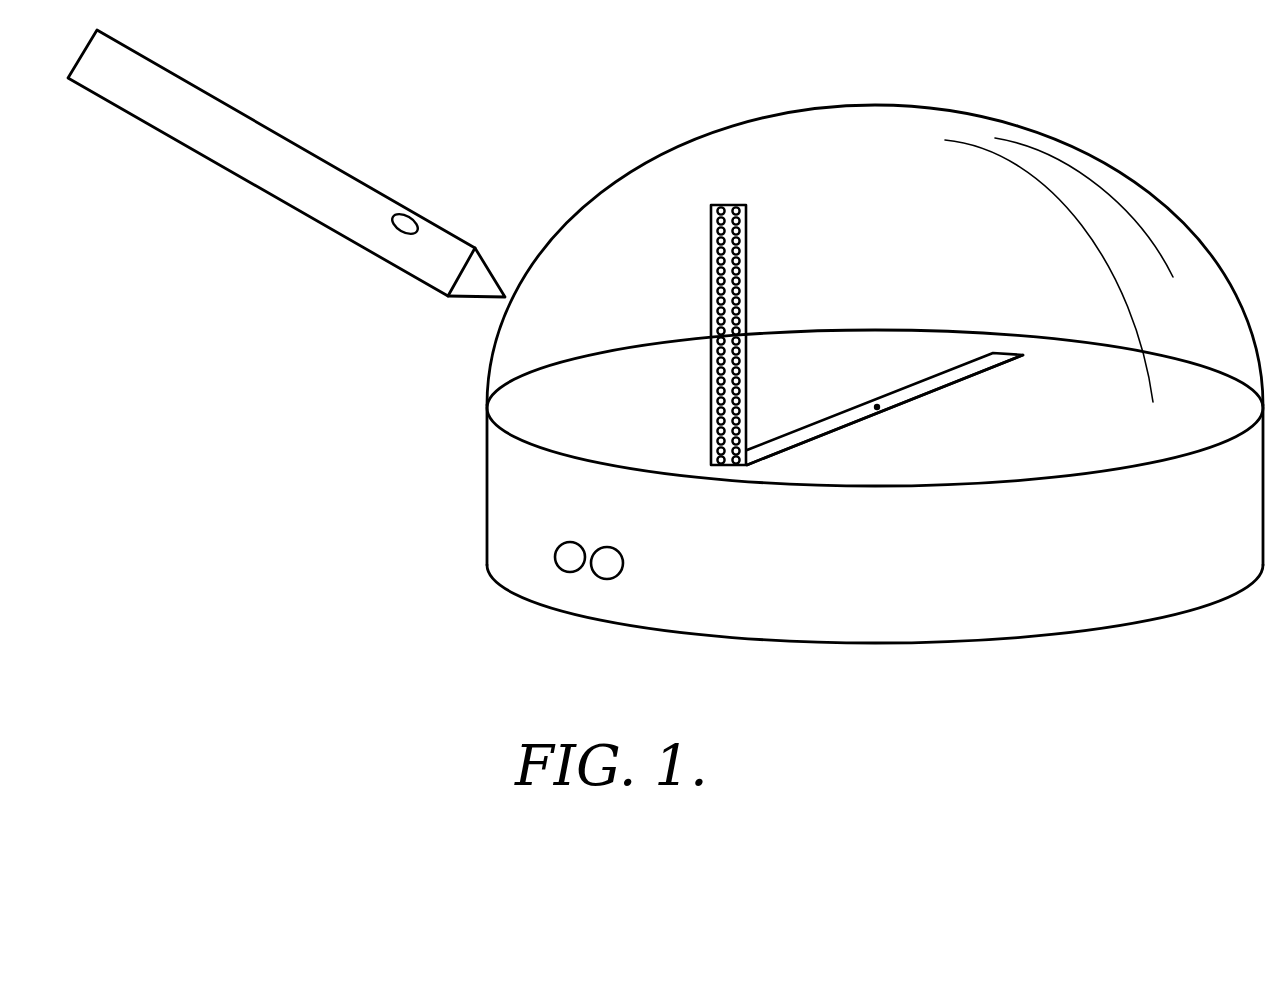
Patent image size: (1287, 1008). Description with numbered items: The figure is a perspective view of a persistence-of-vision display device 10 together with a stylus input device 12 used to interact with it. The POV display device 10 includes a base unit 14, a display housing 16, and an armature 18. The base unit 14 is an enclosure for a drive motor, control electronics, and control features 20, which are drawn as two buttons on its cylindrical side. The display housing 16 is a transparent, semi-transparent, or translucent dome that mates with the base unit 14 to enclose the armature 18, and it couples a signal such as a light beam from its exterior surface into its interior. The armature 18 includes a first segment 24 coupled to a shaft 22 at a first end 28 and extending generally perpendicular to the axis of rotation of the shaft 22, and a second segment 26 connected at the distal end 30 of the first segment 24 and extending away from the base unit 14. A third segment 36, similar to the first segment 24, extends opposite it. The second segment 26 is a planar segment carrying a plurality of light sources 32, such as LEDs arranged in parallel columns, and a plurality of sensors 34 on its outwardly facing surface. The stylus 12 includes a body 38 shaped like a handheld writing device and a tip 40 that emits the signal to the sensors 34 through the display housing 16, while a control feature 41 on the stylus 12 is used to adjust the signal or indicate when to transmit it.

The POV display device 10 is at (592, 101).
The stylus input device 12 is at (356, 245).
The base unit 14 is at (484, 523).
The display housing 16 is at (968, 101).
The armature 18 is at (843, 427).
The control features 20 is at (619, 548).
The shaft 22 is at (875, 405).
The first segment 24 is at (797, 445).
The second segment 26 is at (764, 302).
The first end 28 is at (888, 420).
The distal end 30 is at (698, 461).
The light sources 32 is at (740, 205).
The sensors 34 is at (725, 205).
The third segment 36 is at (1039, 378).
The body 38 is at (304, 163).
The tip 40 is at (505, 296).
The control feature 41 is at (413, 216).